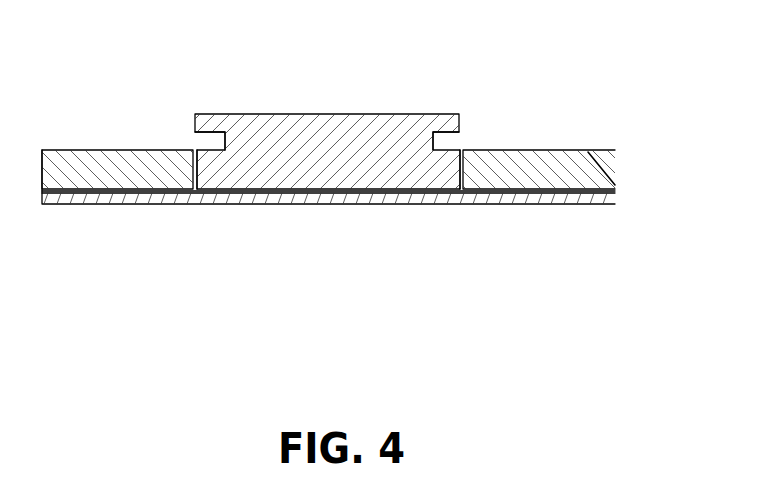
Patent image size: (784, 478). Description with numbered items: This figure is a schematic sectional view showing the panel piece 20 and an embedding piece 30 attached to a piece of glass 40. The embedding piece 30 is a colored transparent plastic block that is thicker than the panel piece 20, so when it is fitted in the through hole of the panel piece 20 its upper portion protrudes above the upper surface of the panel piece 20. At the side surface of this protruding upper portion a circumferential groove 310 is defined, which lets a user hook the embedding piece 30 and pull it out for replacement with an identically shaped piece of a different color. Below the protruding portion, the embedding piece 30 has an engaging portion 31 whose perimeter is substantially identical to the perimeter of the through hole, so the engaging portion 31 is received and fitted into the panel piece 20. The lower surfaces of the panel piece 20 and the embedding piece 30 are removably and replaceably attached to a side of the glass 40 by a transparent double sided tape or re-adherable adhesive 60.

The panel piece 20 is at (112, 162).
The embedding piece 30 is at (334, 130).
The circumferential groove 310 is at (209, 139).
The engaging portion 31 is at (209, 167).
The glass 40 is at (404, 197).
The re-adherable adhesive 60 is at (85, 192).